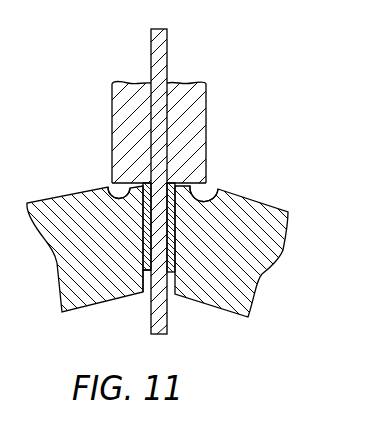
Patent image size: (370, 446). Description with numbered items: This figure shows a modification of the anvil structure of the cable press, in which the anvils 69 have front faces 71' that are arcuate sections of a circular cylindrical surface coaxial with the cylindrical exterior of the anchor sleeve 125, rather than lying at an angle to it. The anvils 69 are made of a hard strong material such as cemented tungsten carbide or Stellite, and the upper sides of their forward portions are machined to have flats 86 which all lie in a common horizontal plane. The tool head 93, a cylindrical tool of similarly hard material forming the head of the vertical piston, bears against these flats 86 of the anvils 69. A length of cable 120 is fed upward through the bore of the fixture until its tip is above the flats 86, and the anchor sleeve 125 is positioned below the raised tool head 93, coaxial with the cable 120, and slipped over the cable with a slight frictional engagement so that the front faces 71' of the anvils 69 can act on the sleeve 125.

The cable 120 is at (168, 50).
The tool head 93 is at (112, 109).
The flats 86 is at (111, 185).
The anvil 69 is at (64, 263).
The front faces 71' is at (162, 227).
The anchor sleeve 125 is at (148, 271).